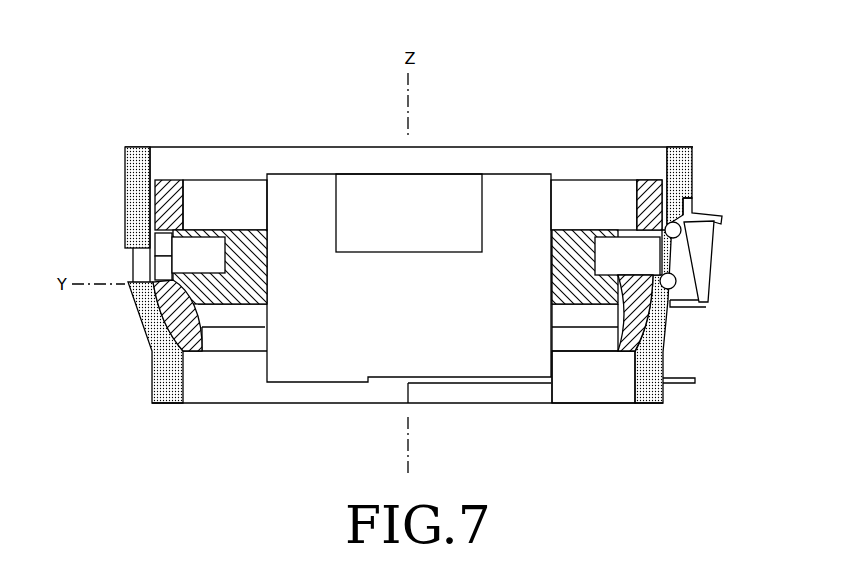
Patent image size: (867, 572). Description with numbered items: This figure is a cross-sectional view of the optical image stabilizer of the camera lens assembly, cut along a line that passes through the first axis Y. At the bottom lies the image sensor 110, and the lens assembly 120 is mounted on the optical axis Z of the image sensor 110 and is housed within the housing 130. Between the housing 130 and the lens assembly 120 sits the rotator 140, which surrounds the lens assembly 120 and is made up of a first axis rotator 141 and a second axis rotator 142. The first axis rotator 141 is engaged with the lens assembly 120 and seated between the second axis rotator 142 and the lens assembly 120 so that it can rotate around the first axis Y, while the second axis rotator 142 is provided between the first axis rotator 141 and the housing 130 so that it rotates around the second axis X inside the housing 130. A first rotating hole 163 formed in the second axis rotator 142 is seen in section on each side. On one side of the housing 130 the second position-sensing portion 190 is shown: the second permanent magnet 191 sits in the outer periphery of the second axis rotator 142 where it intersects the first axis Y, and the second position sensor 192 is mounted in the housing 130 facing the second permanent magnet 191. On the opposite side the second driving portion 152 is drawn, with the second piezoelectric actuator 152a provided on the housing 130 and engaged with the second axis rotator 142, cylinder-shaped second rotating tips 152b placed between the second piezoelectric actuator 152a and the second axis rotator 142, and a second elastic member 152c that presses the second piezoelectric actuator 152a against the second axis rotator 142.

The image sensor 110 is at (483, 383).
The lens assembly 120 is at (455, 185).
The housing 130 is at (136, 157).
The rotator 140 is at (607, 177).
The first axis rotator 141 is at (567, 240).
The second axis rotator 142 is at (647, 190).
The second driving portion 152 is at (754, 254).
The second piezoelectric actuator 152a is at (702, 255).
The second rotating tip 152b is at (681, 229).
The second elastic member 152c is at (733, 296).
The first rotating hole 163 is at (208, 245).
The second position-sensing portion 190 is at (107, 264).
The second permanent magnet 191 is at (142, 260).
The second position sensor 192 is at (155, 232).